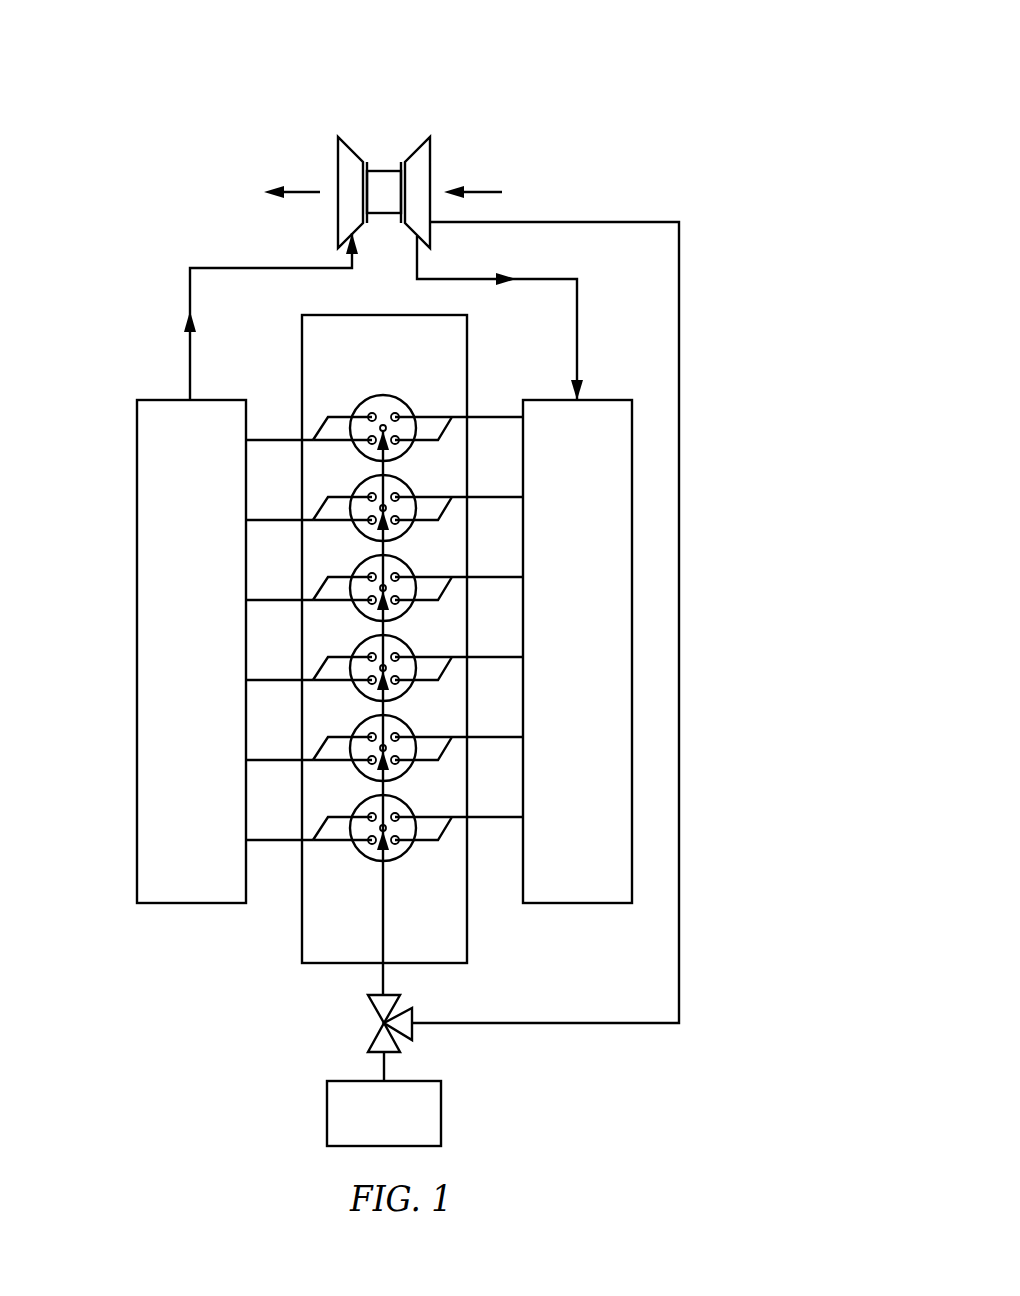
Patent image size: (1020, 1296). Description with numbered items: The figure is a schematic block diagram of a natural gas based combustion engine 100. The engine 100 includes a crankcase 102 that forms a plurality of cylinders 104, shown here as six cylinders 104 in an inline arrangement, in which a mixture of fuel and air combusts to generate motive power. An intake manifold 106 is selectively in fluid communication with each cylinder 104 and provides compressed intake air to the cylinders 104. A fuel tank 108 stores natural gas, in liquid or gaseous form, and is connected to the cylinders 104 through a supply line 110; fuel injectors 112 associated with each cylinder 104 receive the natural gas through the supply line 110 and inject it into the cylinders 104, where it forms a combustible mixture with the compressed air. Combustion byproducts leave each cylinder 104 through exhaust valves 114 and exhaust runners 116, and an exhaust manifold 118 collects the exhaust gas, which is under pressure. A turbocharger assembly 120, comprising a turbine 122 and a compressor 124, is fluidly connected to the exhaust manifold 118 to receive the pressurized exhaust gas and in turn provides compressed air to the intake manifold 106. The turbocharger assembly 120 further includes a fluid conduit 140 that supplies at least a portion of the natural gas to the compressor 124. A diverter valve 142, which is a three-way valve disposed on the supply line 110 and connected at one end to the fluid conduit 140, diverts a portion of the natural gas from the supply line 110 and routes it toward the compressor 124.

The engine 100 is at (698, 80).
The crankcase 102 is at (363, 367).
The cylinders 104 is at (378, 488).
The intake manifold 106 is at (560, 666).
The fuel tank 108 is at (367, 1126).
The supply line 110 is at (383, 923).
The fuel injectors 112 is at (330, 577).
The exhaust valves 114 is at (373, 682).
The exhaust runners 116 is at (265, 438).
The exhaust manifold 118 is at (175, 666).
The turbocharger assembly 120 is at (384, 142).
The turbine 122 is at (338, 152).
The compressor 124 is at (430, 152).
The fluid conduit 140 is at (680, 965).
The diverter valve 142 is at (368, 1040).